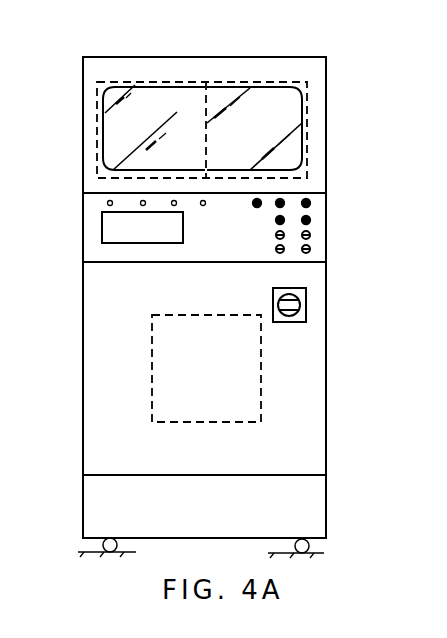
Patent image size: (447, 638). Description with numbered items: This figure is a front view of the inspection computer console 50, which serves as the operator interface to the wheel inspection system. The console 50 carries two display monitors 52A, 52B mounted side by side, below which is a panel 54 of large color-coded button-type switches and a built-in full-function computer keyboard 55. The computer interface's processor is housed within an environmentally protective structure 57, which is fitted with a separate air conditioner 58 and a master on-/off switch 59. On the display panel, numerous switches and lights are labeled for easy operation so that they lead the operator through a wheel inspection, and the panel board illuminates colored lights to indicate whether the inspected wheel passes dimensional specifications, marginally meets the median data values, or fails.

The console 50 is at (330, 152).
The display monitor 52A is at (145, 82).
The display monitor 52B is at (235, 82).
The panel 54 is at (276, 222).
The computer keyboard 55 is at (102, 230).
The environmentally protective structure 57 is at (327, 390).
The air conditioner 58 is at (178, 425).
The master on-/off switch 59 is at (306, 301).